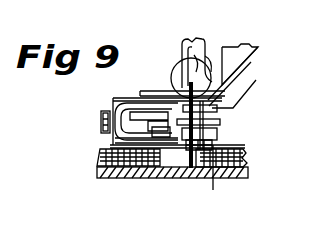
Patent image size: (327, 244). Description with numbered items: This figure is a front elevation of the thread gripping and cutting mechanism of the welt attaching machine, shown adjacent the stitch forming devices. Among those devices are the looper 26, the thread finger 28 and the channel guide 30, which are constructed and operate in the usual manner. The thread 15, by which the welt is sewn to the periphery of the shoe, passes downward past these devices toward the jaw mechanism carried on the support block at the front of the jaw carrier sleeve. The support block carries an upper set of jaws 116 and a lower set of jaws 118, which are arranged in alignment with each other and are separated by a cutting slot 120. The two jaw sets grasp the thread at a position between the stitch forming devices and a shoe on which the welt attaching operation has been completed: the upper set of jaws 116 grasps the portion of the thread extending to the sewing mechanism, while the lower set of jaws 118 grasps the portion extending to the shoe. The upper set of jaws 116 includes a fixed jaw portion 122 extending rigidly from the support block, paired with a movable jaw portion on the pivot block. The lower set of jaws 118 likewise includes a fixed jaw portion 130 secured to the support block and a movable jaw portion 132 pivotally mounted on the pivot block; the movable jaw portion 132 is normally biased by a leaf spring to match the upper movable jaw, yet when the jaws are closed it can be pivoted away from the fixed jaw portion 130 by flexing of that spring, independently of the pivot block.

The thread 15 is at (259, 48).
The looper 26 is at (183, 47).
The thread finger 28 is at (176, 70).
The channel guide 30 is at (250, 38).
The upper set of jaws 116 is at (160, 98).
The lower set of jaws 118 is at (178, 150).
The cutting slot 120 is at (213, 124).
The fixed jaw portion 122 is at (234, 108).
The fixed jaw portion 130 is at (214, 138).
The movable jaw portion 132 is at (160, 148).